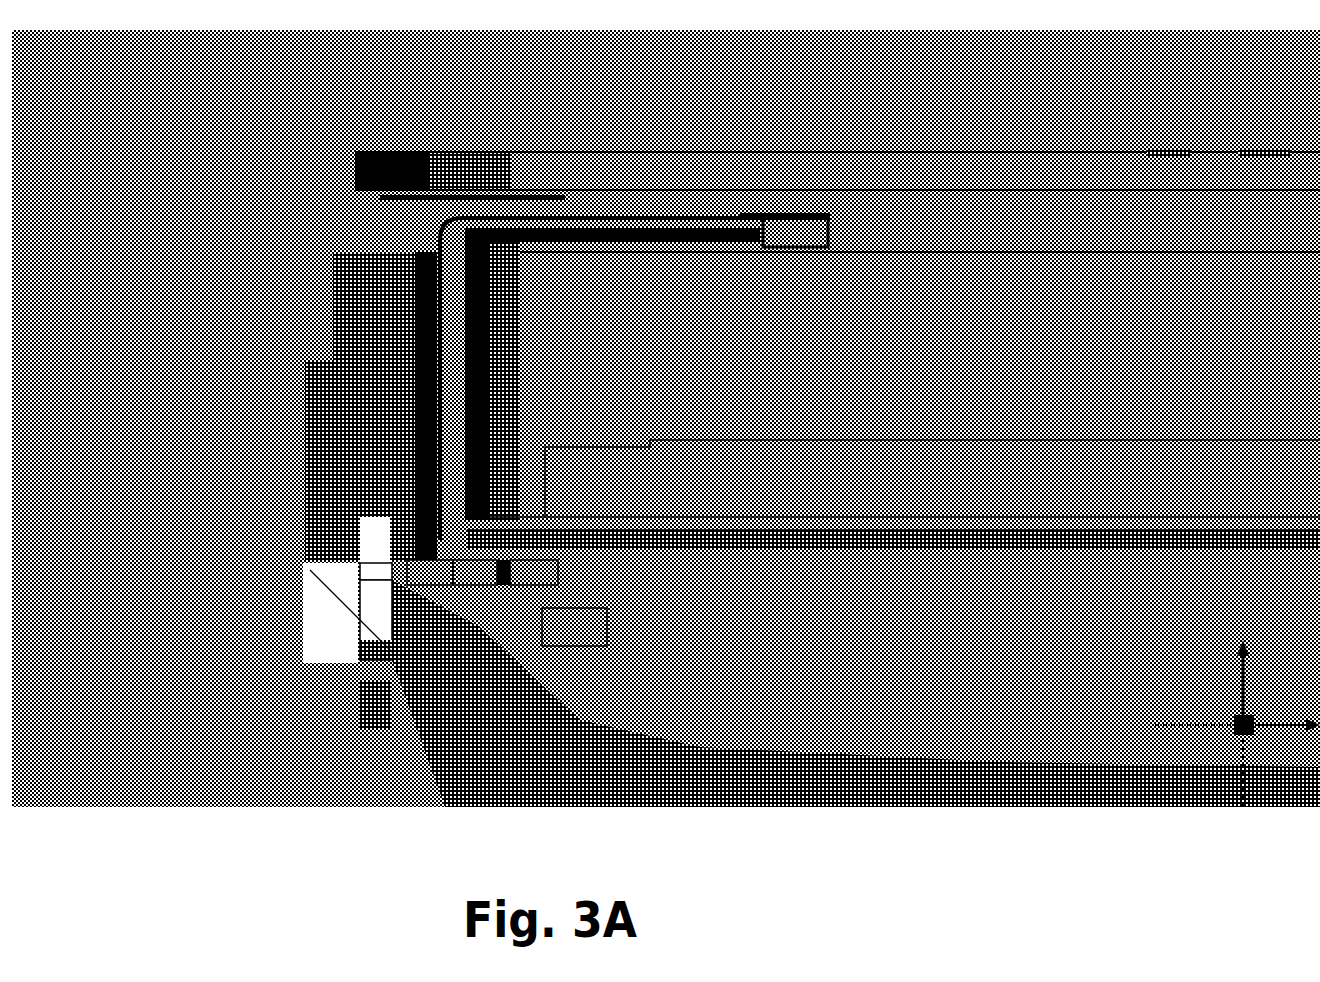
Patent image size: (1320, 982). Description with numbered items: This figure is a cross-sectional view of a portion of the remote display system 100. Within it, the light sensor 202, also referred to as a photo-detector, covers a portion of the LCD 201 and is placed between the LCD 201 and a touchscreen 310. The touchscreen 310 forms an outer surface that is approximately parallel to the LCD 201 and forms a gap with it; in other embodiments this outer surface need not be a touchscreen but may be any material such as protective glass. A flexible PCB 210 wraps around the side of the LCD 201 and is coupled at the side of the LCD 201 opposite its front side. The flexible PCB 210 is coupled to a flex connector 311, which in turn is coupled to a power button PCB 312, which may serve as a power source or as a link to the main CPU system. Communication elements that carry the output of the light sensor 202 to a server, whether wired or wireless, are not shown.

The remote display system 100 is at (740, 797).
The LCD 201 is at (815, 413).
The light sensor 202 is at (838, 231).
The flexible PCB 210 is at (430, 232).
The touchscreen 310 is at (1138, 181).
The flex connector 311 is at (414, 541).
The power button PCB 312 is at (478, 592).